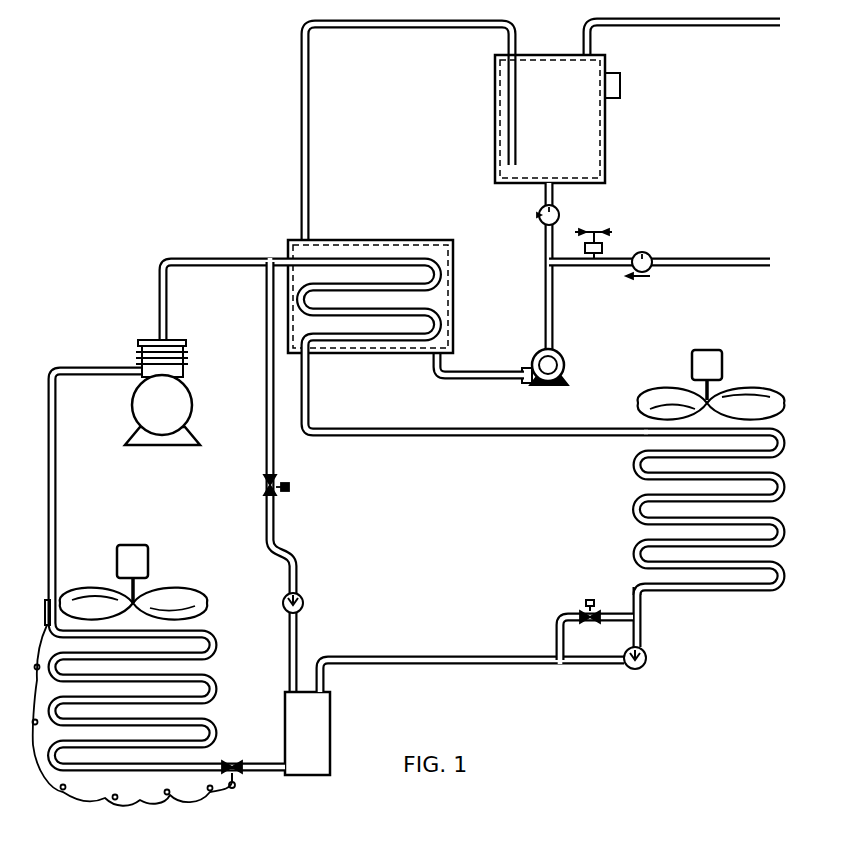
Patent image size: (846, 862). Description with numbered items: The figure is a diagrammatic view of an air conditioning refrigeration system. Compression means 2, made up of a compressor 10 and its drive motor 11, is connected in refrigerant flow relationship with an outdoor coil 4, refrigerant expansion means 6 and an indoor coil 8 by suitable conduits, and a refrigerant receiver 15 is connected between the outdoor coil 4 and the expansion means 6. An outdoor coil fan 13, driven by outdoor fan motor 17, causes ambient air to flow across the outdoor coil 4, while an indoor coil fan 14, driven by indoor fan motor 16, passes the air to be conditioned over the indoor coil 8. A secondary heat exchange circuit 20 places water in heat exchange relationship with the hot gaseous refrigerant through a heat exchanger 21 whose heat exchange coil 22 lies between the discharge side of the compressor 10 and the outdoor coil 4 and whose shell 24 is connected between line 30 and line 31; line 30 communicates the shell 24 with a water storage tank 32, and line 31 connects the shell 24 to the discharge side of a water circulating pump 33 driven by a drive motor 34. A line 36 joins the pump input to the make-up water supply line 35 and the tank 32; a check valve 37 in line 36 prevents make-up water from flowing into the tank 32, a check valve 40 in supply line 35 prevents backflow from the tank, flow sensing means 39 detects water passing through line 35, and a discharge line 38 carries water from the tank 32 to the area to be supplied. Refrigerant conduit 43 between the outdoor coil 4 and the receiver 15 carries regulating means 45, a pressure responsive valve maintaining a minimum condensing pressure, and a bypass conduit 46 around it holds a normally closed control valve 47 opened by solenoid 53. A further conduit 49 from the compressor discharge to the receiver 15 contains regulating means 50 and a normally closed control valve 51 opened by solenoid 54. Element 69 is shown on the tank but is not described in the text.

The compression means 2 is at (147, 390).
The outdoor coil 4 is at (633, 548).
The refrigerant expansion means 6 is at (234, 762).
The indoor coil 8 is at (214, 643).
The compressor 10 is at (140, 347).
The drive motor 11 is at (132, 394).
The outdoor coil fan 13 is at (772, 392).
The indoor coil fan 14 is at (196, 591).
The refrigerant receiver 15 is at (317, 734).
The indoor fan motor 16 is at (143, 572).
The outdoor fan motor 17 is at (717, 375).
The secondary heat exchange circuit 20 is at (300, 46).
The heat exchanger 21 is at (428, 240).
The heat exchange coil 22 is at (437, 272).
The shell 24 is at (438, 294).
The line 30 is at (306, 109).
The line 31 is at (492, 371).
The water storage tank 32 is at (560, 124).
The water circulating pump 33 is at (563, 378).
The drive motor 34 is at (557, 356).
The make-up water supply line 35 is at (706, 259).
The line 36 is at (552, 292).
The check valve 37 is at (557, 213).
The discharge line 38 is at (693, 24).
The flow sensing means 39 is at (603, 247).
The check valve 40 is at (649, 247).
The refrigerant conduit 43 is at (641, 604).
The regulating means 45 is at (648, 658).
The bypass conduit 46 is at (557, 640).
The control valve 47 is at (595, 623).
The conduit 49 is at (274, 459).
The regulating means 50 is at (300, 601).
The control valve 51 is at (264, 486).
The solenoid 53 is at (598, 593).
The solenoid 54 is at (289, 488).
The thermostat 69 is at (620, 86).